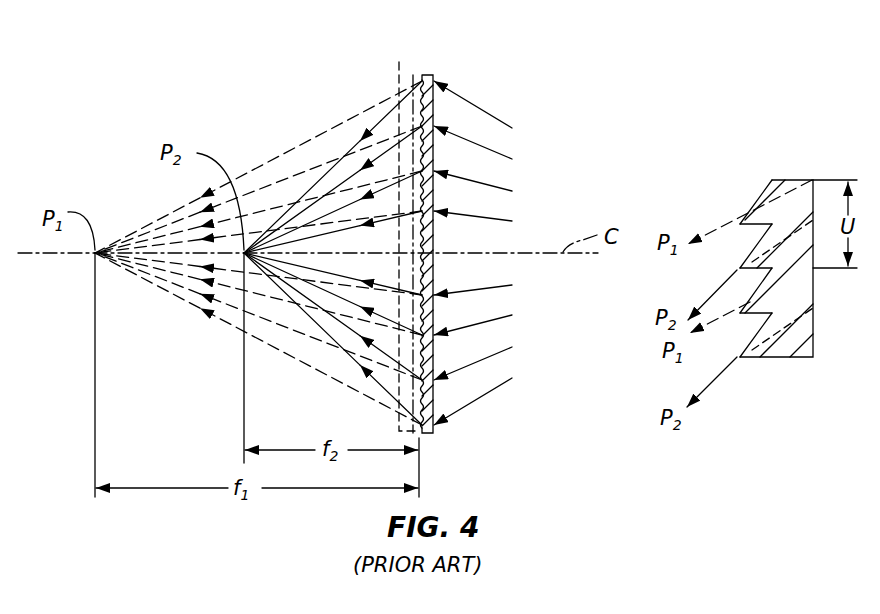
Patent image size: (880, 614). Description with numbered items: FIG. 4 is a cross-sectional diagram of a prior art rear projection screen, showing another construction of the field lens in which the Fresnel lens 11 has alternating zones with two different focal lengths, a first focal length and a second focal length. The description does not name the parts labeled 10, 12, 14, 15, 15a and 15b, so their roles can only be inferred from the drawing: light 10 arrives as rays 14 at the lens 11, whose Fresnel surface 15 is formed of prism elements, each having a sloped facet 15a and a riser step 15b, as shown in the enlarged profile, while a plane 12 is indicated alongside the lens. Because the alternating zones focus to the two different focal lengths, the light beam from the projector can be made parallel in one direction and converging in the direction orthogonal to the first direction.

The incident light 10 is at (434, 192).
The Fresnel lens 11 is at (427, 76).
The principal plane 12 is at (398, 60).
The light rays 14 is at (487, 110).
The Fresnel prism surface 15 is at (420, 244).
The refracting facet surface 15a is at (760, 212).
The riser step surface 15b is at (756, 266).